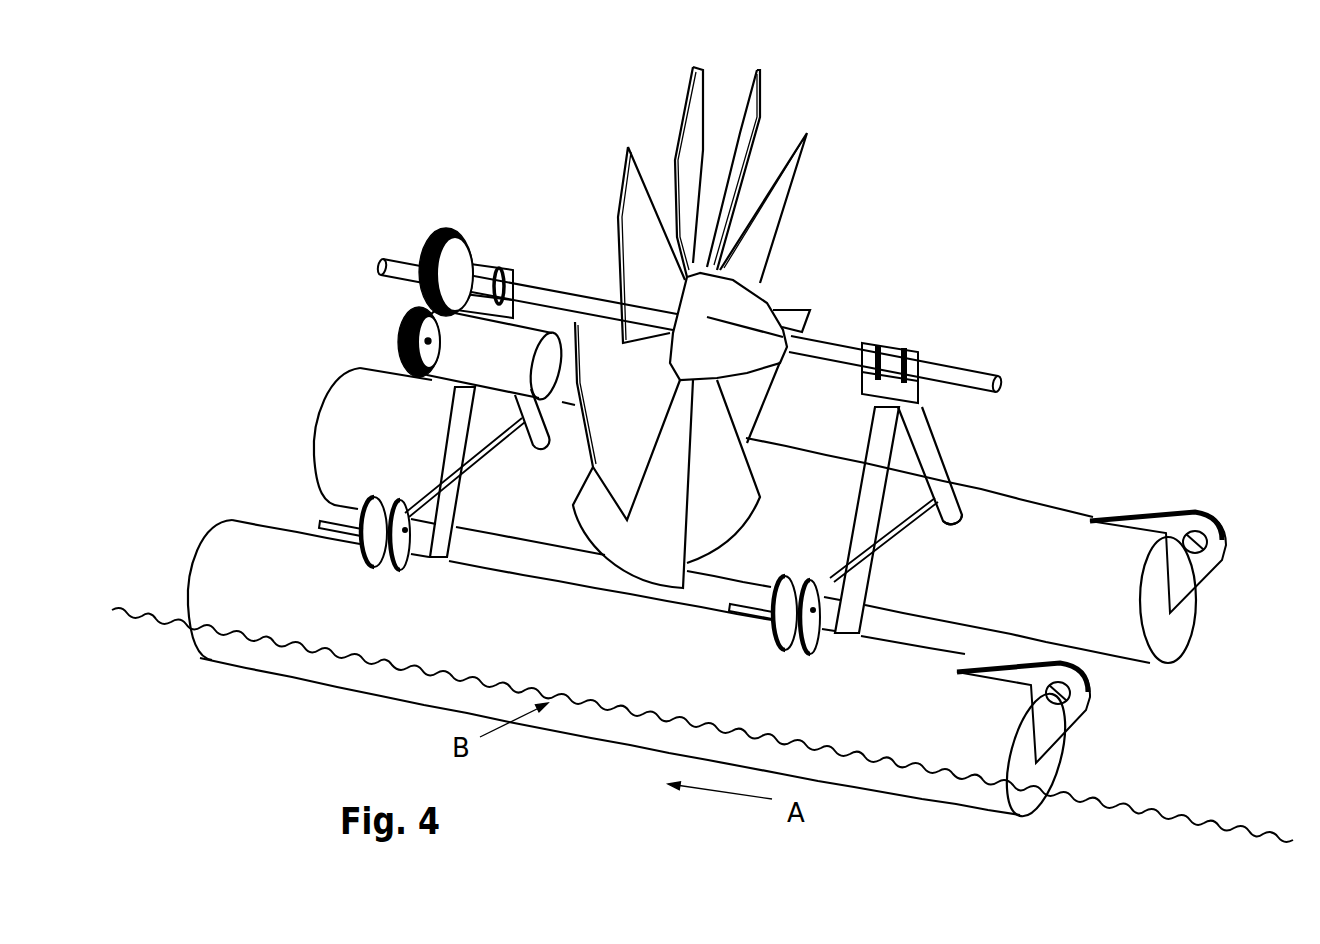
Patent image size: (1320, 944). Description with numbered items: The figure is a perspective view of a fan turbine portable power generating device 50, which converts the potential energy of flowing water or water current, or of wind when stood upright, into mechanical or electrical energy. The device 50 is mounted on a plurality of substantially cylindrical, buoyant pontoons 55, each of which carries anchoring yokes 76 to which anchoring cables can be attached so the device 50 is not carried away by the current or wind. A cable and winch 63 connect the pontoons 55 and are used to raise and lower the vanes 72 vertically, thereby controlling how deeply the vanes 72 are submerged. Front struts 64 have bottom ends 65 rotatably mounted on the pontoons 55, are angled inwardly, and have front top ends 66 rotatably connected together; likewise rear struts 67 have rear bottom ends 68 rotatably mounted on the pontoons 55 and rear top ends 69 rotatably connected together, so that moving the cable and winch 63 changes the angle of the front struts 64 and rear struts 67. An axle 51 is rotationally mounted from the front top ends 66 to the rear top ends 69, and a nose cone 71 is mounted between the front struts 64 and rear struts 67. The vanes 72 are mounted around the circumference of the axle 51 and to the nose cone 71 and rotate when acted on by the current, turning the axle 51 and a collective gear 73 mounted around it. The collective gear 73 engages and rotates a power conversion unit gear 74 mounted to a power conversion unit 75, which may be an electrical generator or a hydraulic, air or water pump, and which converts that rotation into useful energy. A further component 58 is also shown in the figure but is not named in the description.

The fan turbine portable power generating device 50 is at (789, 133).
The axle 51 is at (990, 370).
The pontoons 55 is at (356, 368).
The roller bracket 58 is at (367, 557).
The cable and winch 63 is at (437, 486).
The front struts 64 is at (875, 518).
The bottom ends 65 is at (853, 638).
The front top ends 66 is at (923, 353).
The rear struts 67 is at (455, 460).
The rear bottom ends 68 is at (533, 440).
The rear top ends 69 is at (508, 305).
The nose cone 71 is at (750, 290).
The vanes 72 is at (683, 112).
The collective gear 73 is at (433, 235).
The power conversion unit gear 74 is at (400, 330).
The power conversion unit 75 is at (536, 318).
The anchoring yokes 76 is at (1222, 532).